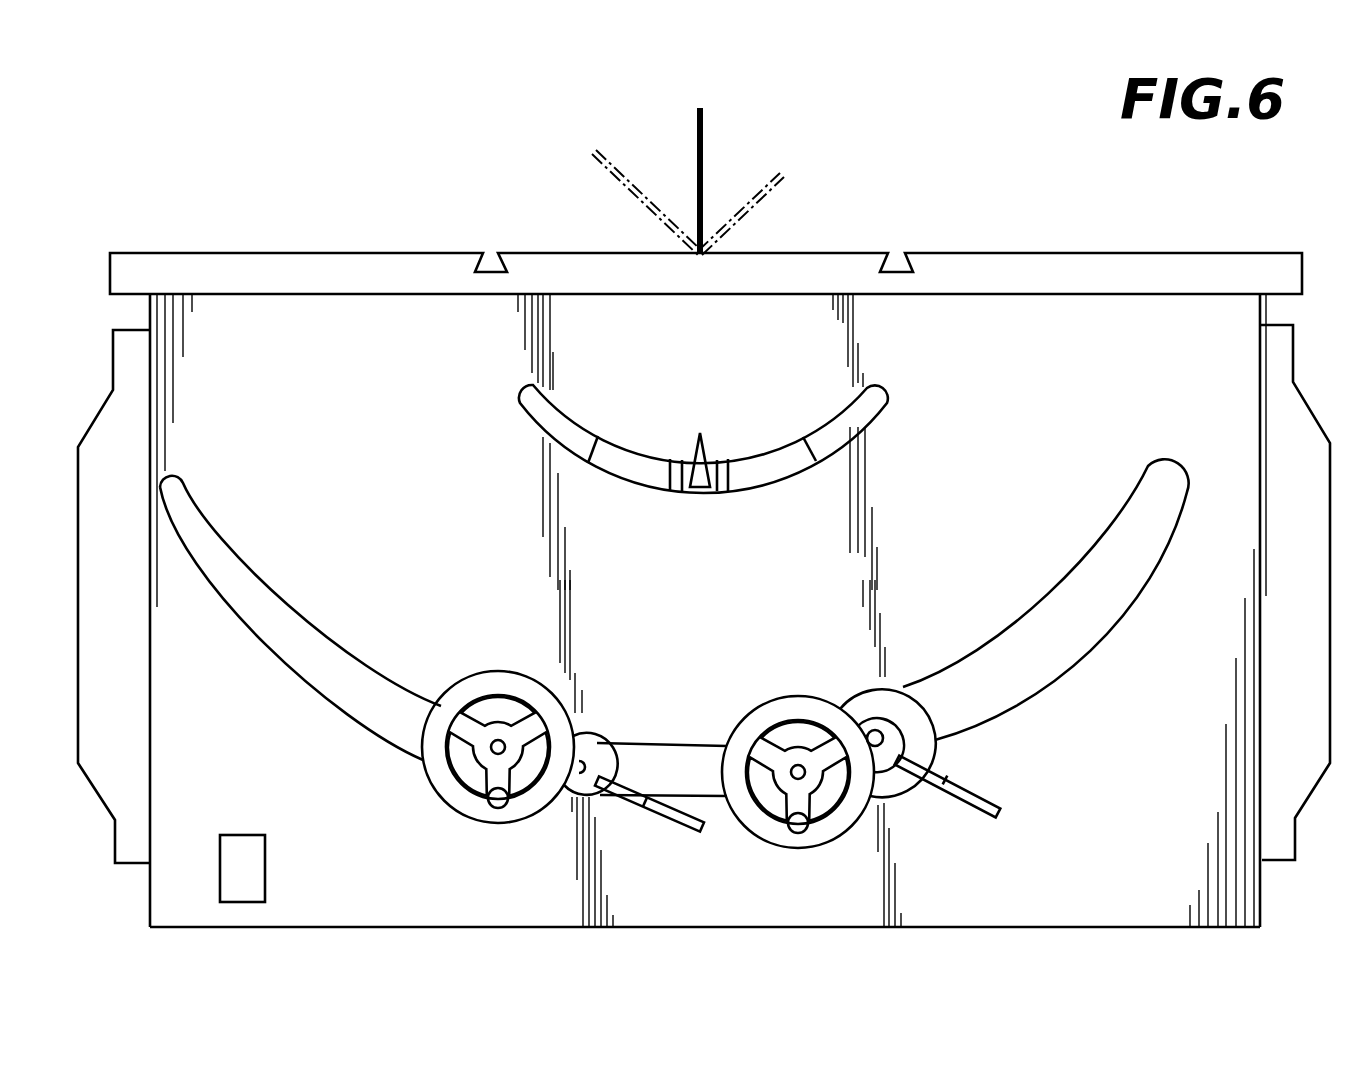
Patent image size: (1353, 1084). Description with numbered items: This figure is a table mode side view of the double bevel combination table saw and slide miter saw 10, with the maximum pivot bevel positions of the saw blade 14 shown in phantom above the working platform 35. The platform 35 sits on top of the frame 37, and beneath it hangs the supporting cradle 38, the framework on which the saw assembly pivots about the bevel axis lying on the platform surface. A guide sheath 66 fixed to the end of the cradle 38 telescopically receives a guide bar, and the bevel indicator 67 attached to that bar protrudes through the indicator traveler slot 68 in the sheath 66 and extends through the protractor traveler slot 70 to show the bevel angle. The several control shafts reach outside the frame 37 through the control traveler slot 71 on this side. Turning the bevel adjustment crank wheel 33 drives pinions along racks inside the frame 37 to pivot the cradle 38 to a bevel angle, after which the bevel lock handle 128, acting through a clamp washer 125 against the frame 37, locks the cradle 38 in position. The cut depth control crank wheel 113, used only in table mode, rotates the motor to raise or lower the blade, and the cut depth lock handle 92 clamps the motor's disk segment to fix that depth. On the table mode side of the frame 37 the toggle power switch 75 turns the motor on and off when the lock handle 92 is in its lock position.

The double bevel combination table saw and slide miter saw 10 is at (1052, 243).
The saw blade 14 is at (705, 147).
The bevel adjustment crank wheel 33 is at (772, 708).
The working platform 35 is at (315, 260).
The frame 37 is at (369, 462).
The supporting cradle 38 is at (777, 460).
The guide sheath 66 is at (723, 493).
The bevel indicator 67 is at (692, 460).
The indicator traveler slot 68 is at (680, 492).
The protractor traveler slot 70 is at (888, 420).
The control traveler slot 71 is at (1060, 650).
The toggle power switch 75 is at (253, 859).
The cut depth lock handle 92 is at (588, 743).
The cut depth control crank wheel 113 is at (487, 682).
The clamp washer 125 is at (893, 780).
The bevel lock handle 128 is at (887, 720).